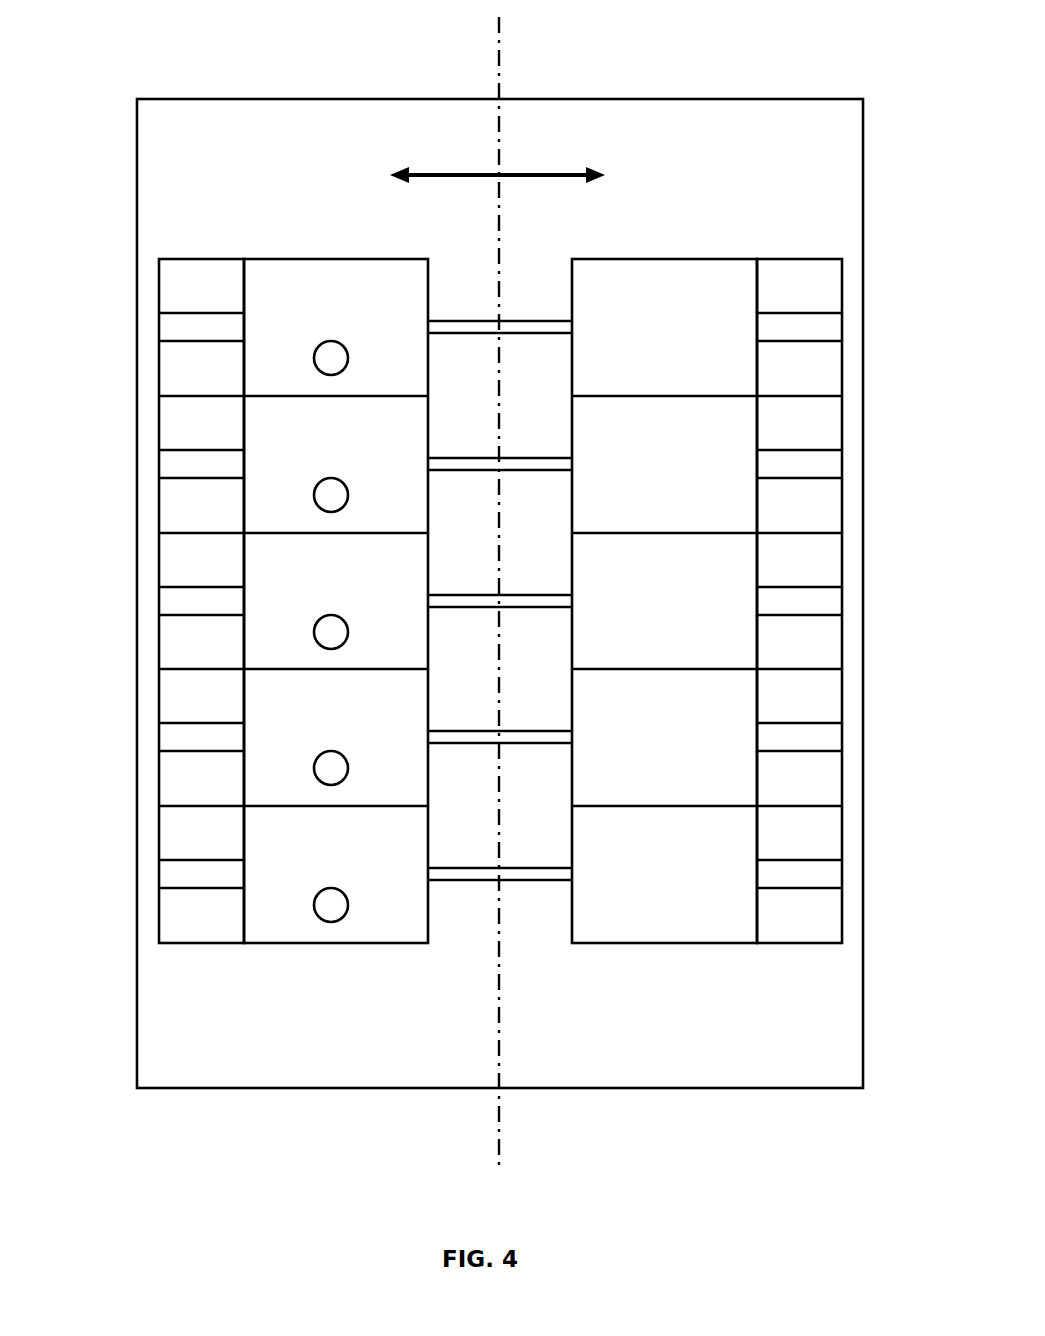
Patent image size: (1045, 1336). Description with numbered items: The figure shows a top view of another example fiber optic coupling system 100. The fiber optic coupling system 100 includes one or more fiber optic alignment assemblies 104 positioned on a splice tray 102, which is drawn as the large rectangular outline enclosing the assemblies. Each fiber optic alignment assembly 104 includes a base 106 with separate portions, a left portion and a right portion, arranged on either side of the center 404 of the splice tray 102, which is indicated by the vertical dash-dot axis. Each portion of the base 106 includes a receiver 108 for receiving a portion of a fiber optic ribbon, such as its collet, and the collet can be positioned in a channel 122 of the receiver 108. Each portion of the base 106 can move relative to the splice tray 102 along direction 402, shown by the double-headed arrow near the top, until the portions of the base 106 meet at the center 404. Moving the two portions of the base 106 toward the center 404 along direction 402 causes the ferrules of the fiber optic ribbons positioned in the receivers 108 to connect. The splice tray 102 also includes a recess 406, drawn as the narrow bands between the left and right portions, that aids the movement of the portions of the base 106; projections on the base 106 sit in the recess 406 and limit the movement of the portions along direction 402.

The fiber optic coupling system 100 is at (162, 39).
The splice tray 102 is at (336, 1090).
The fiber optic alignment assembly 104 is at (122, 331).
The base 106 is at (331, 273).
The receiver 108 is at (200, 273).
The channel 122 is at (168, 327).
The direction 402 is at (551, 172).
The center 404 is at (501, 41).
The recess 406 is at (538, 323).